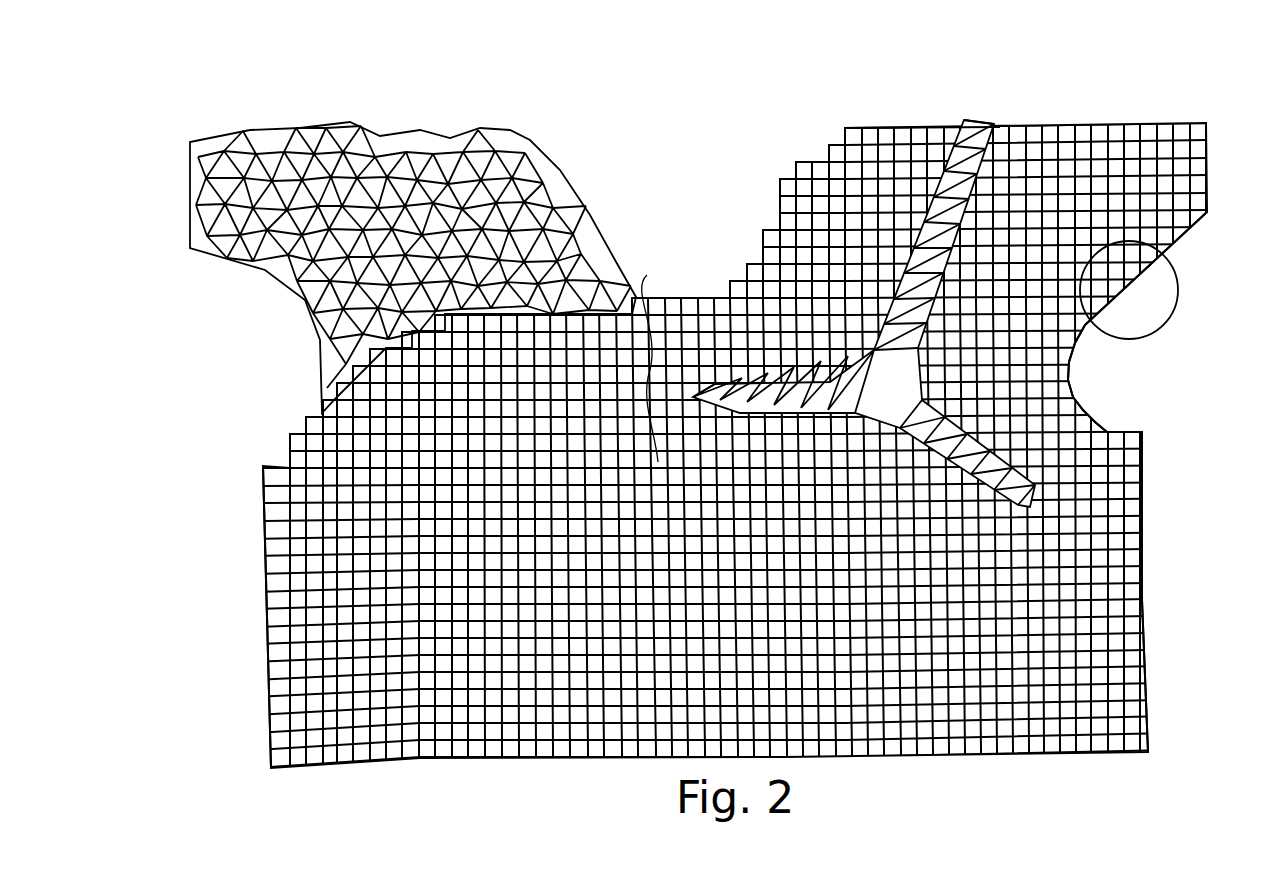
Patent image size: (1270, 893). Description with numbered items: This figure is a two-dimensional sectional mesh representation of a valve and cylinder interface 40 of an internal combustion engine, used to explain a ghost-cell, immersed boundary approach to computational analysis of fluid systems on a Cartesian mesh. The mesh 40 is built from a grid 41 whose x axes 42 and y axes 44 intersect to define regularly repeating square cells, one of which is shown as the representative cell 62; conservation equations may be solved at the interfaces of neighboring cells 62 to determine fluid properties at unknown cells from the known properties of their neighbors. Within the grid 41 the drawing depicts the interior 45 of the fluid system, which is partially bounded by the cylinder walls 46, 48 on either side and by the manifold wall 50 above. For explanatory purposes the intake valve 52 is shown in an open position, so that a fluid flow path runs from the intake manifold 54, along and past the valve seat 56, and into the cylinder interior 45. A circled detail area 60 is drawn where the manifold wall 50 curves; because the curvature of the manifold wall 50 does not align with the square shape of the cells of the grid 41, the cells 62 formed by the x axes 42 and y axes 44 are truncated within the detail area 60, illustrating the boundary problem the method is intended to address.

The valve and cylinder interface 40 is at (640, 188).
The grid 41 is at (827, 150).
The x axes 42 is at (797, 170).
The y axes 44 is at (928, 95).
The interior 45 is at (656, 357).
The cylinder wall 46 is at (1150, 590).
The cylinder wall 48 is at (266, 592).
The manifold wall 50 is at (1085, 405).
The intake valve 52 is at (1012, 182).
The intake manifold 54 is at (1067, 183).
The valve seat 56 is at (1093, 415).
The detail area 60 is at (1163, 320).
The cell 62 is at (773, 260).